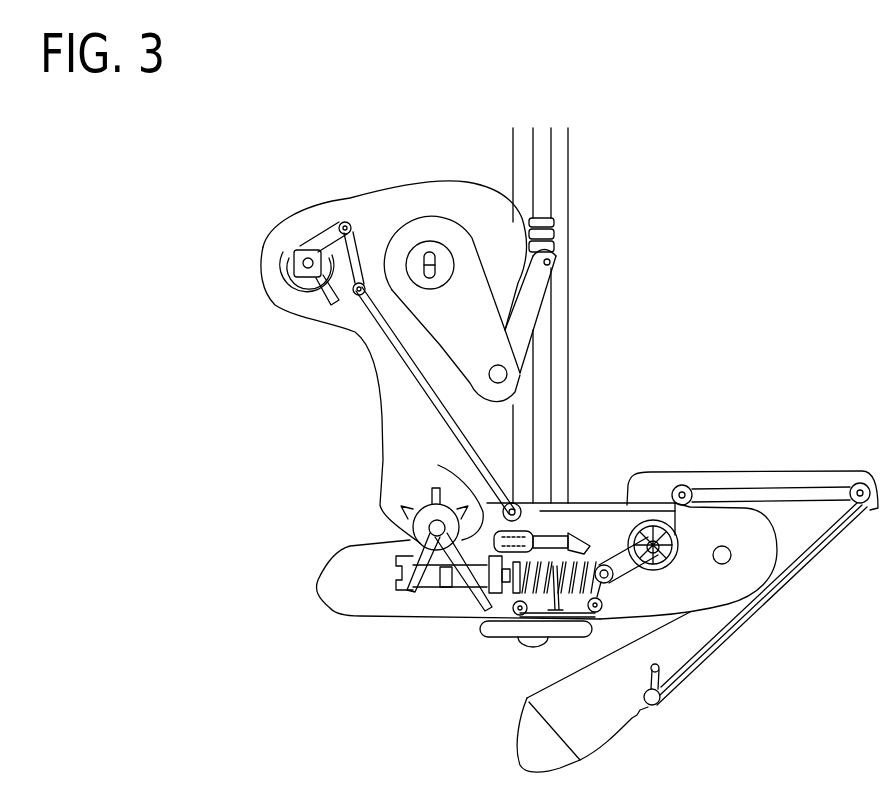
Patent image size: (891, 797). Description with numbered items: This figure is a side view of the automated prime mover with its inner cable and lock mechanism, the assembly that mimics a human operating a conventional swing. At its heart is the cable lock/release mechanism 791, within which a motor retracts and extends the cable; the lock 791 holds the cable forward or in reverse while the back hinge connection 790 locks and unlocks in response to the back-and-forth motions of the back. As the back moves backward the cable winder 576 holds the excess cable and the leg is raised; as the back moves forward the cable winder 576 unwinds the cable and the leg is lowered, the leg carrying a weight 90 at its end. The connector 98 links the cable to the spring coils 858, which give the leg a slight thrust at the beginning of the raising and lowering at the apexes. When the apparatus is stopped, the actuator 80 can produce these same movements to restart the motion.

The cable winder 576 is at (297, 271).
The cable lock/release mechanism 791 is at (438, 465).
The back hinge connection 790 is at (410, 517).
The actuator 80 is at (397, 580).
The spring coils 858 is at (590, 560).
The connector 98 is at (547, 617).
The weight 90 is at (522, 738).